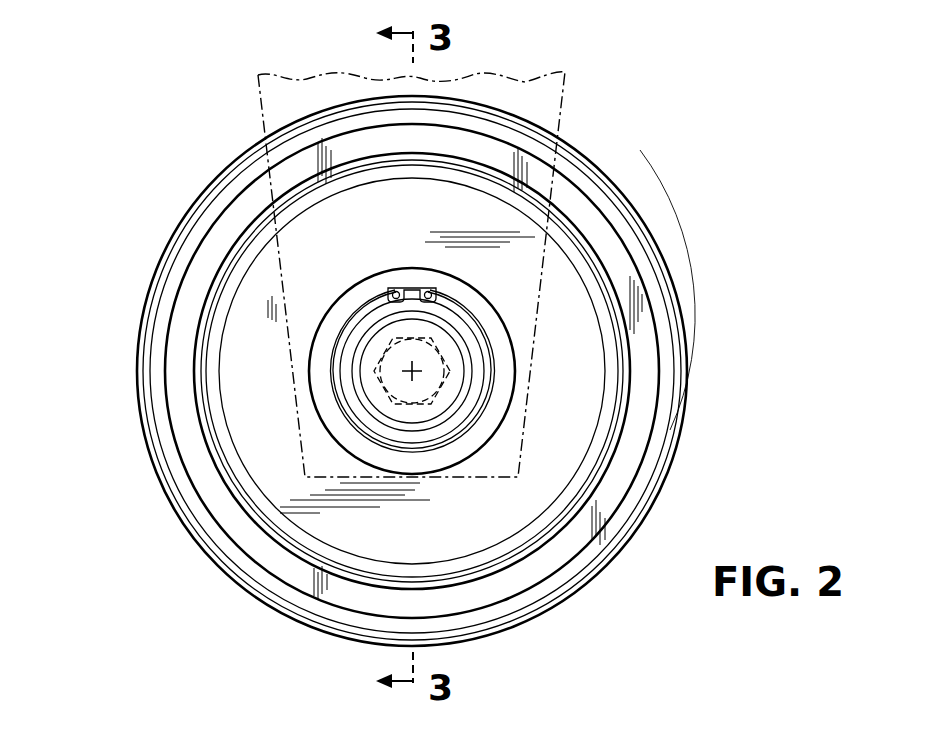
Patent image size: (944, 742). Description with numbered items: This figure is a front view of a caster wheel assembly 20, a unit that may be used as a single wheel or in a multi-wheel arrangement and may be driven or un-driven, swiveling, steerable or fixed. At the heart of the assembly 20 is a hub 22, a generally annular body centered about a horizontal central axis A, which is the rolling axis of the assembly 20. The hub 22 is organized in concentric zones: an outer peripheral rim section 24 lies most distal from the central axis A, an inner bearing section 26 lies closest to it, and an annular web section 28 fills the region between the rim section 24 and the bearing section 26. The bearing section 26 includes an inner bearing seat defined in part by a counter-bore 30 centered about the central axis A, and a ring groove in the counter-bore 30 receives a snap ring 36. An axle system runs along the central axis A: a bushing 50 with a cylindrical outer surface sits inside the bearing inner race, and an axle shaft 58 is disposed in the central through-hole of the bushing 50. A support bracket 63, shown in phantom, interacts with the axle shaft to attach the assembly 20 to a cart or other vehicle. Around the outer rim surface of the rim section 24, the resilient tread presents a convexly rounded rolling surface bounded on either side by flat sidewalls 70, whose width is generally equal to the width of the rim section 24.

The caster wheel assembly 20 is at (92, 182).
The hub 22 is at (663, 318).
The rim section 24 is at (596, 228).
The bearing section 26 is at (368, 292).
The web section 28 is at (335, 527).
The counter-bore 30 is at (340, 350).
The snap ring 36 is at (430, 283).
The bushing 50 is at (411, 391).
The axle shaft 58 is at (478, 379).
The support bracket 63 is at (565, 86).
The sidewalls 70 is at (664, 387).
The central axis A is at (410, 366).